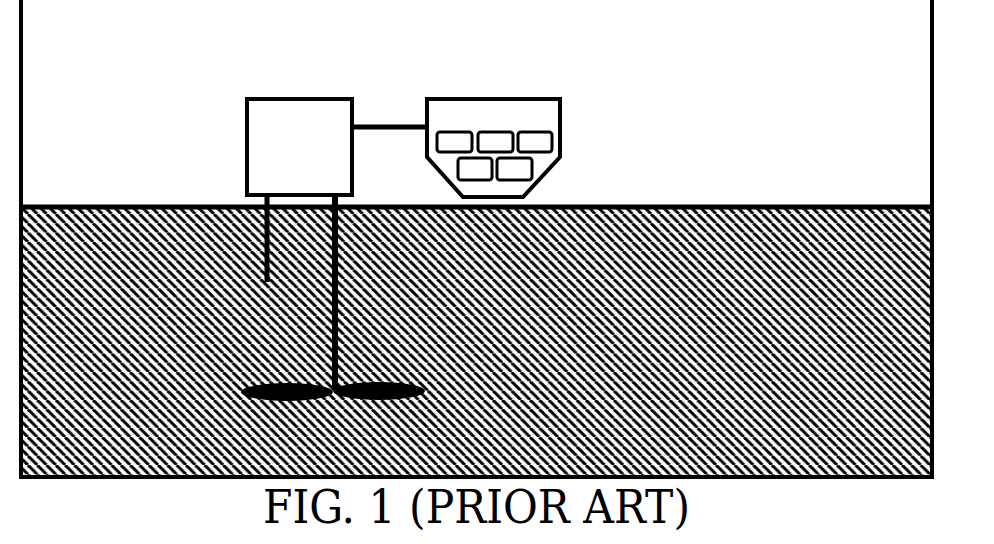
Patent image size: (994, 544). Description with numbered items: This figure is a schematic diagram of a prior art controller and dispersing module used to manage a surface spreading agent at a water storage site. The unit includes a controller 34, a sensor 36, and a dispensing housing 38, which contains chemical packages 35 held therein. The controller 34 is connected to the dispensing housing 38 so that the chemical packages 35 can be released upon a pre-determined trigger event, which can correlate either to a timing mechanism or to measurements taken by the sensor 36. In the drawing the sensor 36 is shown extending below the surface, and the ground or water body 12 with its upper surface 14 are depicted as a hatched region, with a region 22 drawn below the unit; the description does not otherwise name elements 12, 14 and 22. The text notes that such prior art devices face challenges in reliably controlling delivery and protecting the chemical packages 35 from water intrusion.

The subsurface ground 12 is at (708, 237).
The ground surface 14 is at (814, 206).
The contaminant plume 22 is at (425, 393).
The controller 34 is at (320, 133).
The chemical packages 35 is at (535, 143).
The sensor 36 is at (263, 248).
The dispensing housing 38 is at (512, 117).